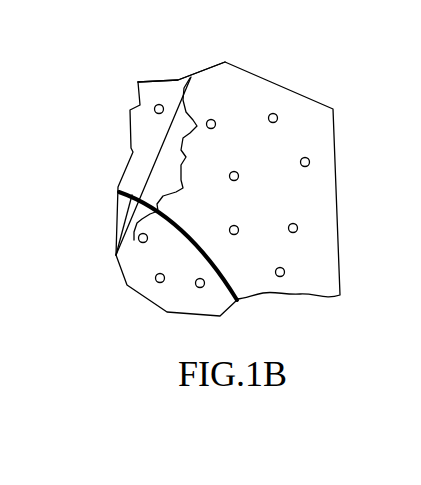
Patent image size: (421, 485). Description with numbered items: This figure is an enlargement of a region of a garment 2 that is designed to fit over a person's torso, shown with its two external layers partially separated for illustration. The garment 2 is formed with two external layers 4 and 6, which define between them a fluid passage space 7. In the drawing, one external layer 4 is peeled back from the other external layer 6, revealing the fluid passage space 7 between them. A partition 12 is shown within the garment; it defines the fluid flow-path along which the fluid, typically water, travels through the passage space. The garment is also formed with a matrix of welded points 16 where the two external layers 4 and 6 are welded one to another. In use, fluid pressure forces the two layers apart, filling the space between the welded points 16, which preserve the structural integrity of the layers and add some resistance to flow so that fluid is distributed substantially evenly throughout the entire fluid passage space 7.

The garment 2 is at (300, 68).
The external layer 4 is at (147, 125).
The external layer 6 is at (215, 82).
The fluid passage space 7 is at (139, 158).
The partition 12 is at (188, 243).
The welded points 16 is at (288, 273).